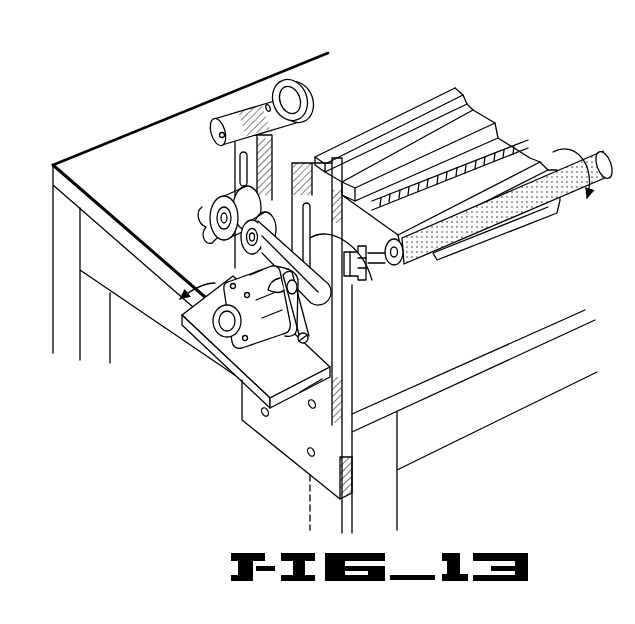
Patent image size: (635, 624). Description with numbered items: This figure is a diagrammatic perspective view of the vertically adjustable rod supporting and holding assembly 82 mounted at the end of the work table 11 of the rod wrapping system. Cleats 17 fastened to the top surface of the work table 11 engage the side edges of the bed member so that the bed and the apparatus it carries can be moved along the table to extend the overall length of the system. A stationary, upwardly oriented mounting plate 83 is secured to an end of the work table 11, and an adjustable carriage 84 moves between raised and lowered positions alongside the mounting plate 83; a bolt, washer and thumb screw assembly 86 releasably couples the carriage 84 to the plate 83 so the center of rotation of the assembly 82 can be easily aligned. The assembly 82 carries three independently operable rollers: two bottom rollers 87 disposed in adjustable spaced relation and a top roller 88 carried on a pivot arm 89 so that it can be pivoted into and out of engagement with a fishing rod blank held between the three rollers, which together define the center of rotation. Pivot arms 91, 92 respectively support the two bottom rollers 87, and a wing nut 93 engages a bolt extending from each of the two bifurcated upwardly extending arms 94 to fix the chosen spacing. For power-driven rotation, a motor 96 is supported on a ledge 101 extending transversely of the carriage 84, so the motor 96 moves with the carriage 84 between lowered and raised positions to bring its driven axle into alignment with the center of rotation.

The work table 11 is at (522, 285).
The cleats 17 is at (432, 100).
The vertically adjustable rod supporting and holding assembly 82 is at (175, 186).
The mounting plate 83 is at (290, 430).
The adjustable carriage 84 is at (330, 358).
The bolt, washer and thumb screw assembly 86 is at (330, 330).
The bottom rollers 87 is at (231, 197).
The top roller 88 is at (306, 93).
The pivot arm 89 is at (233, 110).
The pivot arm 91 is at (360, 285).
The pivot arm 92 is at (290, 168).
The wing nut 93 is at (330, 322).
The bifurcated upwardly extending arms 94 is at (240, 157).
The motor 96 is at (240, 374).
The ledge 101 is at (294, 379).